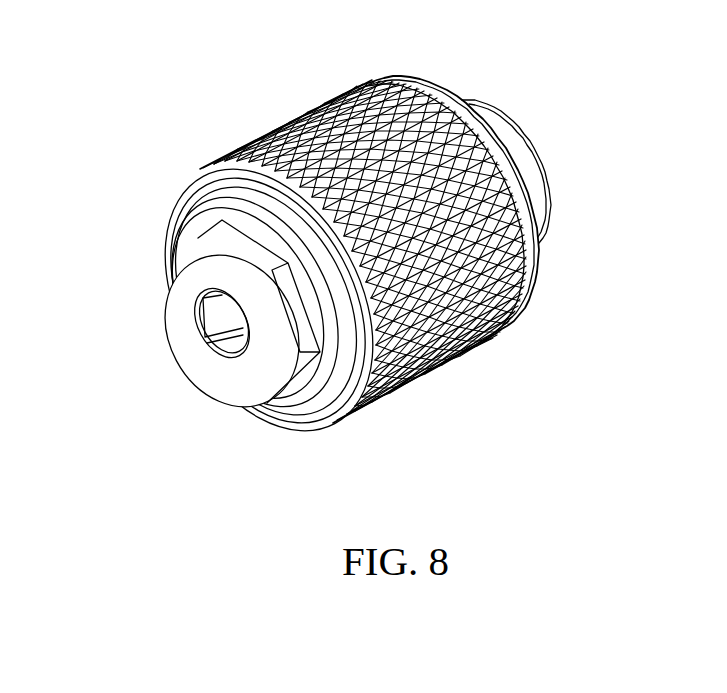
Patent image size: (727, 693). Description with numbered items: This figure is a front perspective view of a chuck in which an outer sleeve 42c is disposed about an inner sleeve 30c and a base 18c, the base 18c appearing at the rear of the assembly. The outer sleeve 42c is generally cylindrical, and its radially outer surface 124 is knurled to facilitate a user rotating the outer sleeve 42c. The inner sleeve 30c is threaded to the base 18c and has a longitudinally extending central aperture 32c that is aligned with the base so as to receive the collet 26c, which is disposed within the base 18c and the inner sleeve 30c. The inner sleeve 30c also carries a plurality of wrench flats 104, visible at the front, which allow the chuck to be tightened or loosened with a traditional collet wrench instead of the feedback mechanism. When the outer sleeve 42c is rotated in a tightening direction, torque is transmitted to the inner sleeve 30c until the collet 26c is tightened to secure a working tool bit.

The outer sleeve 42c is at (330, 108).
The base 18c is at (535, 162).
The radially outer surface 124 is at (499, 341).
The inner sleeve 30c is at (295, 412).
The wrench flats 104 is at (233, 248).
The collet 26c is at (221, 324).
The central aperture 32c is at (206, 350).